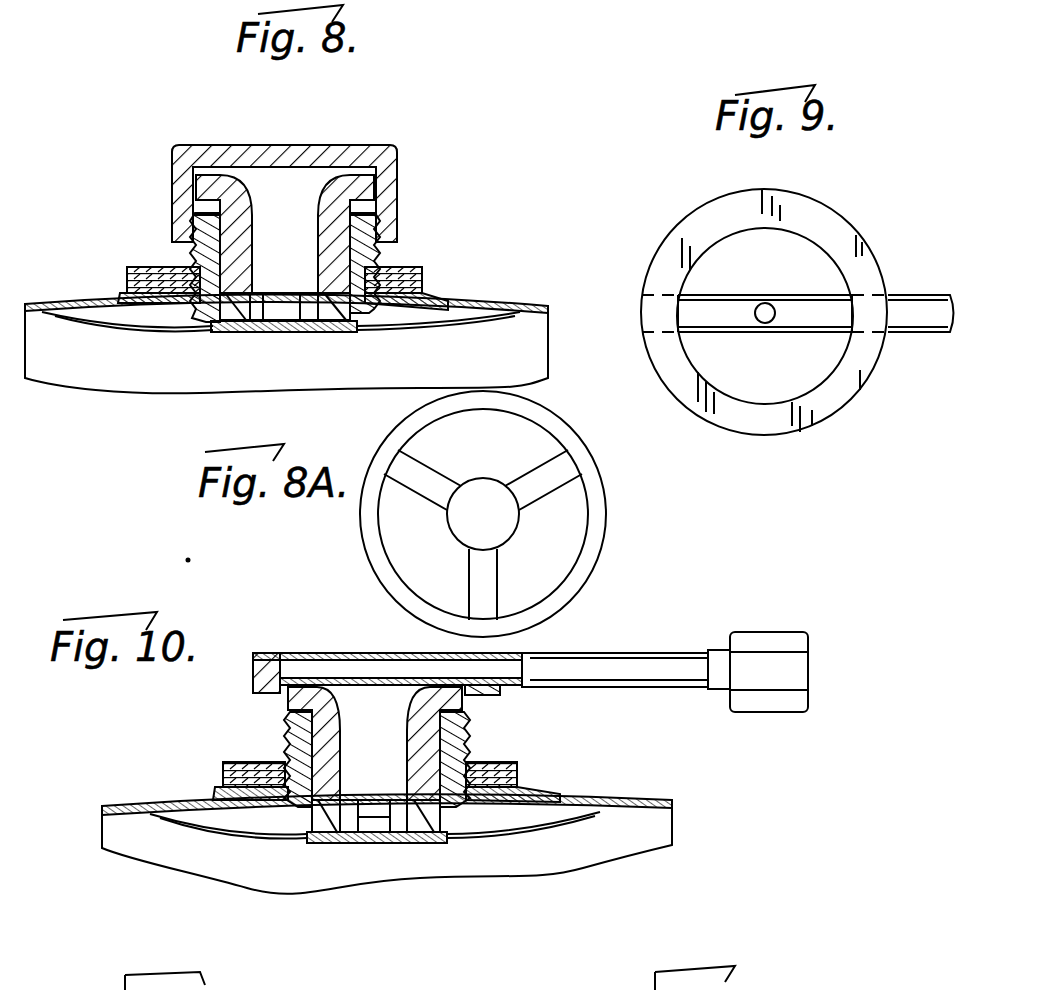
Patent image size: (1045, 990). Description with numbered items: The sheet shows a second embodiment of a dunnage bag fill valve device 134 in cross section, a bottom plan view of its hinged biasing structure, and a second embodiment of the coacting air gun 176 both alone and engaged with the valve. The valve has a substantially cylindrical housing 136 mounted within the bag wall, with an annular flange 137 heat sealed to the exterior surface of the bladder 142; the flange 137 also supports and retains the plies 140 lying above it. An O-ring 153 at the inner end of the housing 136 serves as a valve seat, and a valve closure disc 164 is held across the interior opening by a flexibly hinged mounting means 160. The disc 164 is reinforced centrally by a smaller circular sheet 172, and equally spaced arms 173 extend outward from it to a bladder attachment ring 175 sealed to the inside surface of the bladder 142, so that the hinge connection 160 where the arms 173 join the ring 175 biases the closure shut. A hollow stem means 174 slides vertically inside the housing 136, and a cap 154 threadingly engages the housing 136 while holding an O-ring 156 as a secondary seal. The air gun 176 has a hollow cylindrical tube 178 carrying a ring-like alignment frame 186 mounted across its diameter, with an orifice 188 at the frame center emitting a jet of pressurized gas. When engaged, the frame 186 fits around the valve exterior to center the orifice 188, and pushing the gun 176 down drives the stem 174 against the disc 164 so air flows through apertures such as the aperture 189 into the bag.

In FIG. 8, the dunnage bag fill valve device 134 is at (423, 222).
In FIG. 10, the dunnage bag fill valve device 134 is at (232, 722).
In FIG. 8, the valve housing 136 is at (190, 240).
In FIG. 10, the valve housing 136 is at (472, 758).
In FIG. 8, the annular flange 137 is at (420, 300).
In FIG. 10, the annular flange 137 is at (535, 795).
In FIG. 8, the plies 140 is at (408, 266).
In FIG. 10, the plies 140 is at (520, 777).
In FIG. 8, the bladder 142 is at (475, 303).
In FIG. 10, the bladder 142 is at (635, 805).
In FIG. 8, the O-ring 153 is at (213, 325).
In FIG. 10, the O-ring 153 is at (445, 800).
In FIG. 8, the cap 154 is at (212, 143).
In FIG. 8, the O-ring 156 is at (173, 216).
In FIG. 8, the flexibly hinged mounting means 160 is at (92, 320).
In FIG. 8, the valve closure disc 164 is at (290, 326).
In FIG. 8, the circular reinforcing sheet 172 is at (318, 333).
In FIG. 8A, the circular reinforcing sheet 172 is at (455, 522).
In FIG. 10, the circular reinforcing sheet 172 is at (345, 844).
In FIG. 8, the arms 173 is at (165, 330).
In FIG. 8A, the arms 173 is at (533, 480).
In FIG. 10, the arms 173 is at (258, 822).
In FIG. 8, the stem means 174 is at (318, 214).
In FIG. 8, the bladder attachment ring 175 is at (52, 314).
In FIG. 8A, the bladder attachment ring 175 is at (600, 522).
In FIG. 10, the bladder attachment ring 175 is at (145, 815).
In FIG. 9, the air gun 176 is at (908, 278).
In FIG. 10, the air gun 176 is at (628, 640).
In FIG. 9, the hollow cylindrical tube 178 is at (915, 326).
In FIG. 10, the hollow cylindrical tube 178 is at (602, 683).
In FIG. 9, the ring-like alignment frame 186 is at (830, 406).
In FIG. 10, the ring-like alignment frame 186 is at (490, 698).
In FIG. 9, the orifice 188 is at (768, 302).
In FIG. 10, the orifice 188 is at (385, 686).
In FIG. 8, the aperture 189 is at (278, 303).
In FIG. 10, the aperture 189 is at (372, 810).